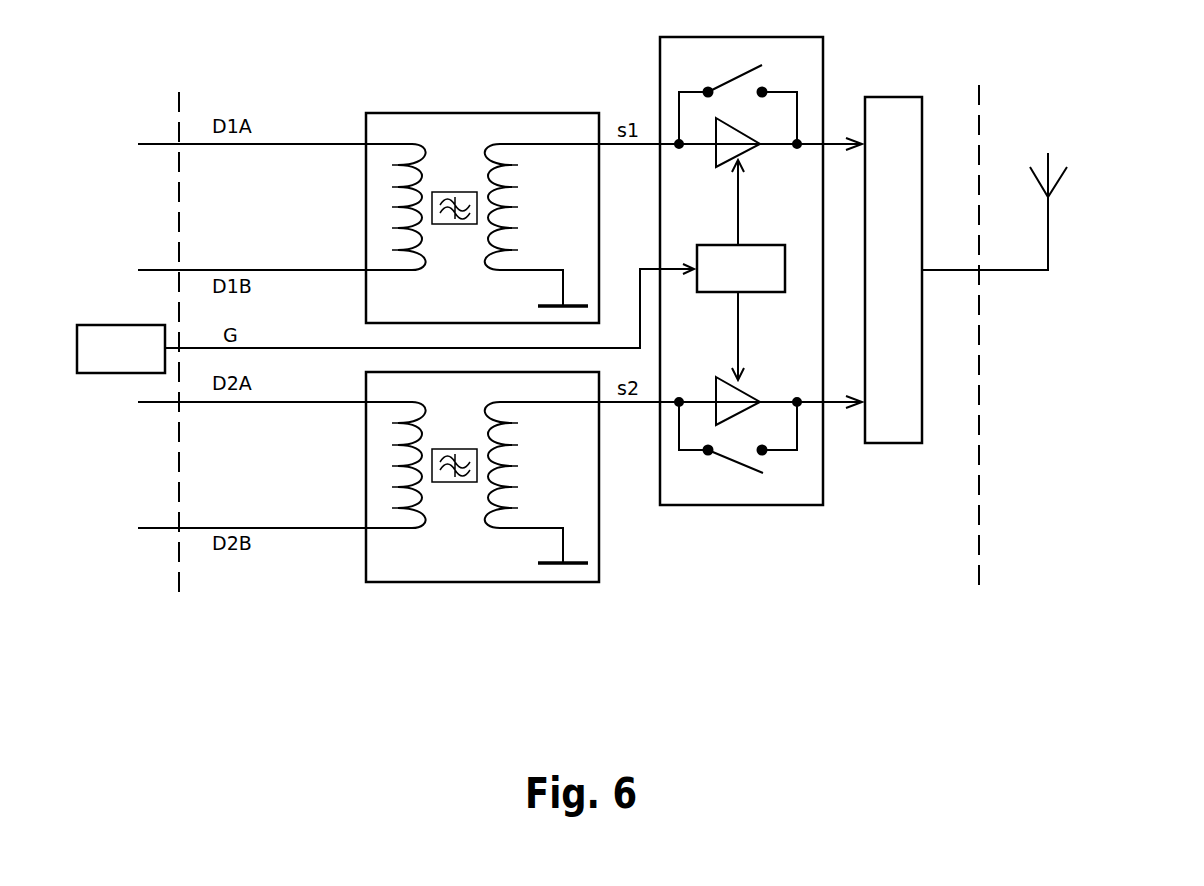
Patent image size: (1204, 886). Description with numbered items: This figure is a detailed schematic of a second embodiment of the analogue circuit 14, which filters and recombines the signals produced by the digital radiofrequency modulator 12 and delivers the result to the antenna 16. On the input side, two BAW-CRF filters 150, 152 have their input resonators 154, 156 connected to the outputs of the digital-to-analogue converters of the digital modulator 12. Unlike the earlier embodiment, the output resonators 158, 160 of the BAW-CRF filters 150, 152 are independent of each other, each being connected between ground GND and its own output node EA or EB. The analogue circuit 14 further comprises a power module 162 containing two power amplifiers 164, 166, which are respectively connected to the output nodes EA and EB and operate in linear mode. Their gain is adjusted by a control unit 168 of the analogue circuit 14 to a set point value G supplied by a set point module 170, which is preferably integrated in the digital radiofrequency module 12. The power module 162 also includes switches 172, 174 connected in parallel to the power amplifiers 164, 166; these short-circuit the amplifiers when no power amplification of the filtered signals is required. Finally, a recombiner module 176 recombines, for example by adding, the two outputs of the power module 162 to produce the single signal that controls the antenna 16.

The digital radiofrequency modulator 12 is at (147, 563).
The analogue circuit 14 is at (370, 650).
The antenna 16 is at (1048, 228).
The BAW-CRF filter 150 is at (467, 113).
The BAW-CRF filter 152 is at (543, 582).
The input resonator 154 is at (420, 156).
The input resonator 156 is at (421, 514).
The output resonator 158 is at (490, 156).
The output resonator 160 is at (489, 512).
The power module 162 is at (707, 505).
The power amplifier 164 is at (740, 152).
The power amplifier 166 is at (747, 395).
The control unit 168 is at (741, 270).
The set point module 170 is at (385, 318).
The switch 172 is at (758, 82).
The switch 174 is at (740, 463).
The recombiner module 176 is at (897, 430).